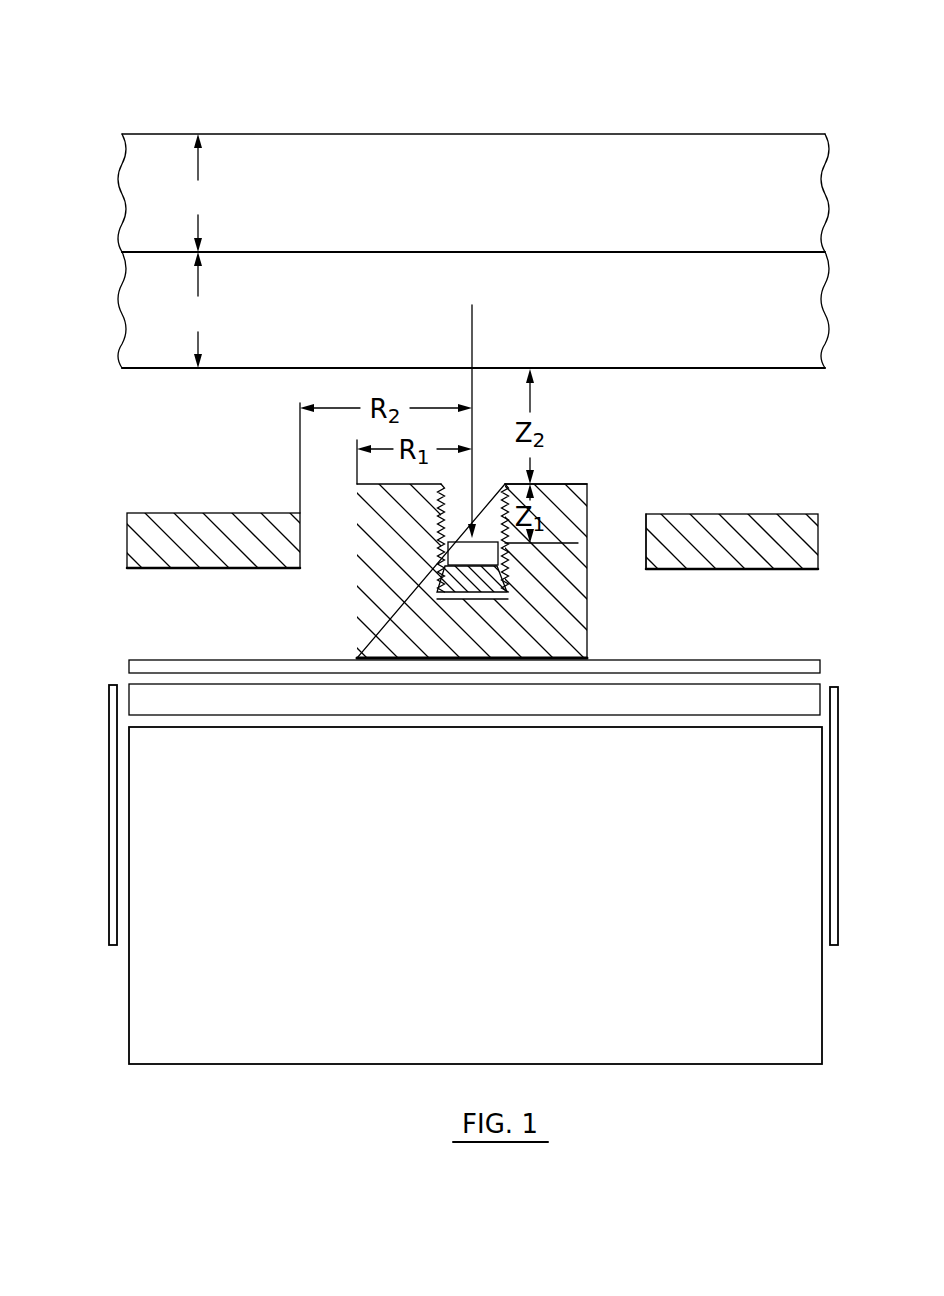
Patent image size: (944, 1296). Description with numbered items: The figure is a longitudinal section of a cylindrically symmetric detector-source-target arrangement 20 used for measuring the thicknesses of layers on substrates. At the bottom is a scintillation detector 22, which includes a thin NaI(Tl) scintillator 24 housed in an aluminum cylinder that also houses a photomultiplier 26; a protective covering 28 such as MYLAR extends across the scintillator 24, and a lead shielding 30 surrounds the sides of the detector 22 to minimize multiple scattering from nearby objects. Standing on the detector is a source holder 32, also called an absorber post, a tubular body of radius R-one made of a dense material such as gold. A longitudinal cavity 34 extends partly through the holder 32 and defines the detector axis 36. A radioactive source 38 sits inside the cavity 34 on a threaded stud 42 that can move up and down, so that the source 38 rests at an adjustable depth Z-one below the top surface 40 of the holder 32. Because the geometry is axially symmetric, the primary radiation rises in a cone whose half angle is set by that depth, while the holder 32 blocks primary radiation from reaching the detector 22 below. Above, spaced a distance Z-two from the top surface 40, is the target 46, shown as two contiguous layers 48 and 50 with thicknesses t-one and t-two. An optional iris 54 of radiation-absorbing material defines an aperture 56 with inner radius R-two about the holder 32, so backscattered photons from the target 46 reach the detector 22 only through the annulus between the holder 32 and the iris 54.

The detector-source-target arrangement 20 is at (744, 106).
The scintillation detector 22 is at (494, 841).
The NaI(Tl) scintillator 24 is at (270, 700).
The photomultiplier 26 is at (471, 1004).
The protective covering 28 is at (200, 668).
The lead shielding 30 is at (110, 700).
The source holder 32 is at (570, 533).
The longitudinal cavity 34 is at (444, 520).
The detector axis 36 is at (472, 340).
The radioactive source 38 is at (455, 553).
The top surface 40 is at (572, 484).
The threaded stud 42 is at (497, 578).
The target 46 is at (511, 243).
The layer 48 is at (660, 160).
The layer 50 is at (473, 331).
The iris 54 is at (204, 522).
The aperture 56 is at (645, 548).